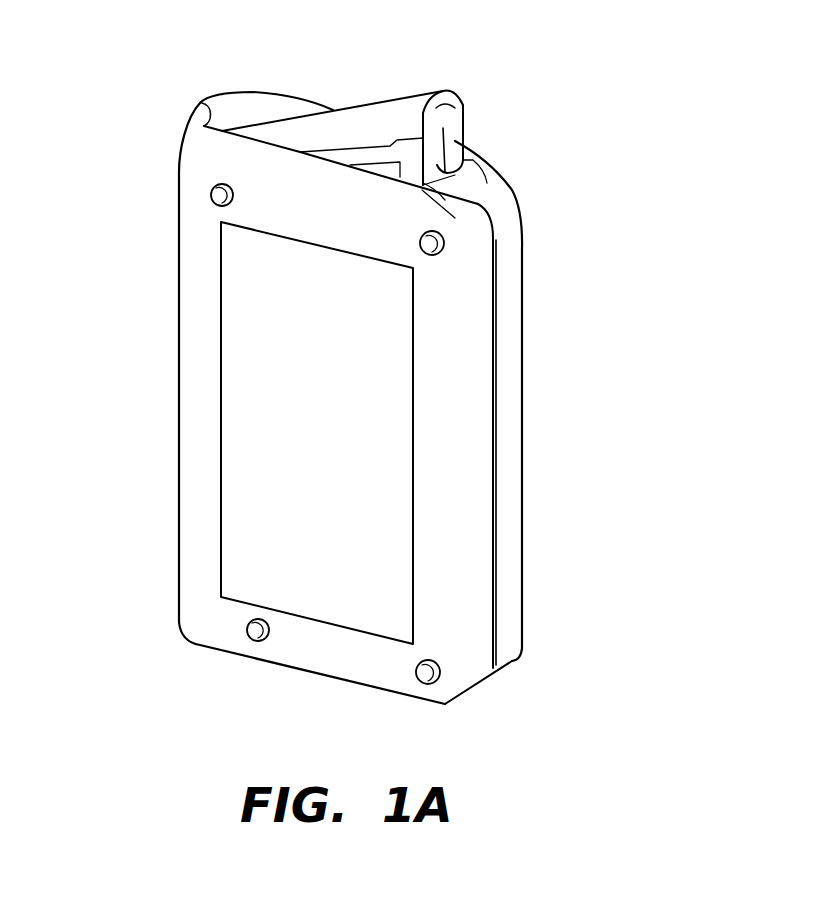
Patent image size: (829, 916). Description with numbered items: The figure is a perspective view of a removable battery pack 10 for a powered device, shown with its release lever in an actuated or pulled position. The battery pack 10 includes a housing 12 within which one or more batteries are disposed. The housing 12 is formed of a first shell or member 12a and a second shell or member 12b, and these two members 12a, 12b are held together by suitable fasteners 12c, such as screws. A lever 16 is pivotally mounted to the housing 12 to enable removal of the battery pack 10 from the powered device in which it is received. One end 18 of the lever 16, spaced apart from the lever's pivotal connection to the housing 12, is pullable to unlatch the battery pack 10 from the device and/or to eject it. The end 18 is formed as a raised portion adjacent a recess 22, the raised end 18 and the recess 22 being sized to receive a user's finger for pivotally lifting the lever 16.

The removable battery pack 10 is at (150, 366).
The housing 12 is at (197, 253).
The first shell or member 12a is at (193, 582).
The second shell or member 12b is at (520, 197).
The fasteners 12c is at (212, 192).
The lever 16 is at (350, 117).
The end of the lever 18 is at (447, 92).
The recess 22 is at (450, 123).